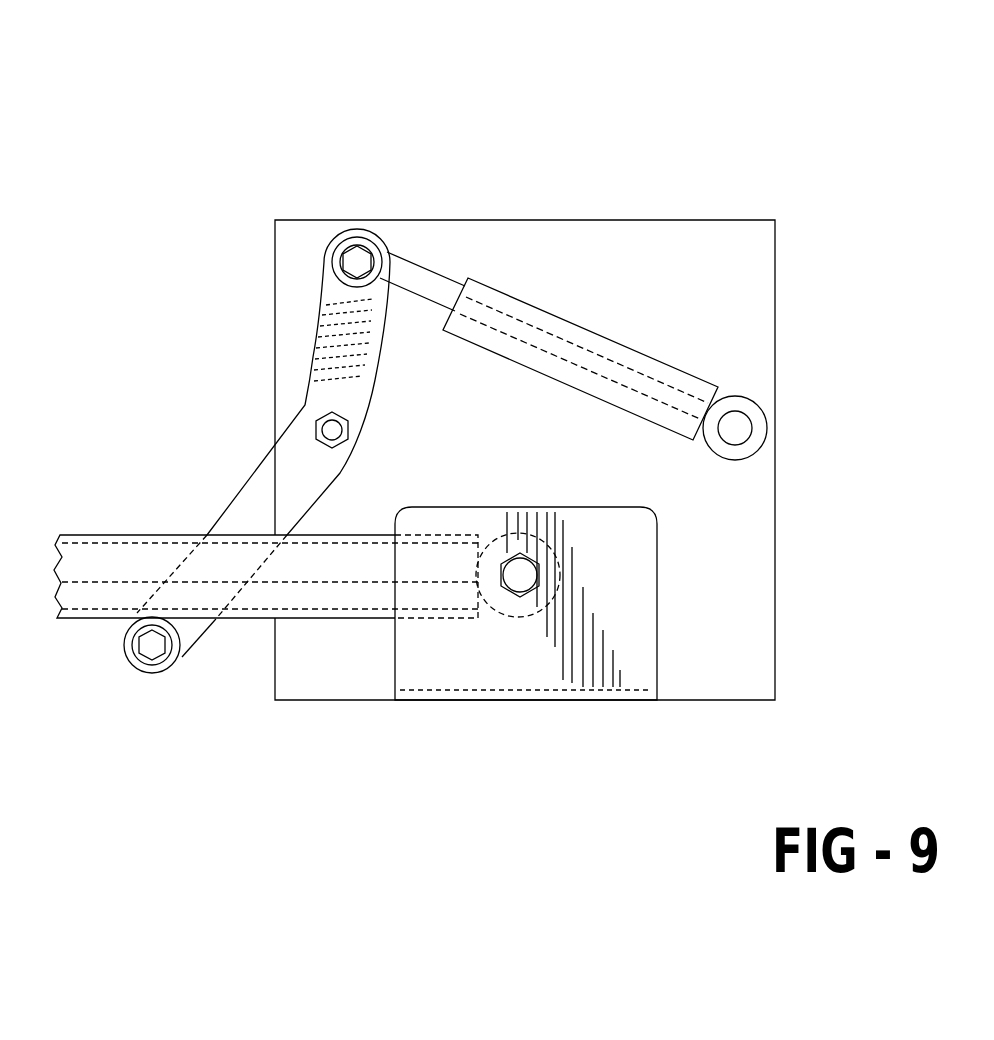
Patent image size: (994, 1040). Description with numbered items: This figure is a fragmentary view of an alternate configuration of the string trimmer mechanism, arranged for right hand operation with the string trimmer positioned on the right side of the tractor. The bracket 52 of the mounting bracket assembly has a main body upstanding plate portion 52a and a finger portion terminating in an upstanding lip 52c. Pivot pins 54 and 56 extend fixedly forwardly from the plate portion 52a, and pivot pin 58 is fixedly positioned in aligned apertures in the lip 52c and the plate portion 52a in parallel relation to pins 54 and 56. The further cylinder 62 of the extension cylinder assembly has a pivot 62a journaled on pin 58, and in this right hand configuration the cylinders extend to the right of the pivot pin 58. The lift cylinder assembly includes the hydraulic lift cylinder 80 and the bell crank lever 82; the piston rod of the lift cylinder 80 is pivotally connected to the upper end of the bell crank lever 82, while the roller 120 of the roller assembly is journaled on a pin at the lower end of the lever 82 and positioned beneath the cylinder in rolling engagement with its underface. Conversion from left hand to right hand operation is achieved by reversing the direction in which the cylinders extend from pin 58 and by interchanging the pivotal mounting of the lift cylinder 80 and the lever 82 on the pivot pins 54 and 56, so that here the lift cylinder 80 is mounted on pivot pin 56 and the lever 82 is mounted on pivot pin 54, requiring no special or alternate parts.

The bracket 52 is at (733, 154).
The main body upstanding plate portion 52a is at (551, 458).
The upstanding lip 52c is at (657, 630).
The pivot pin 54 is at (275, 383).
The pivot pin 56 is at (740, 432).
The pivot pin 58 is at (520, 578).
The further cylinder 62 is at (127, 553).
The pivot 62a is at (548, 605).
The hydraulic lift cylinder 80 is at (611, 340).
The bell crank lever 82 is at (340, 303).
The roller 120 is at (160, 645).